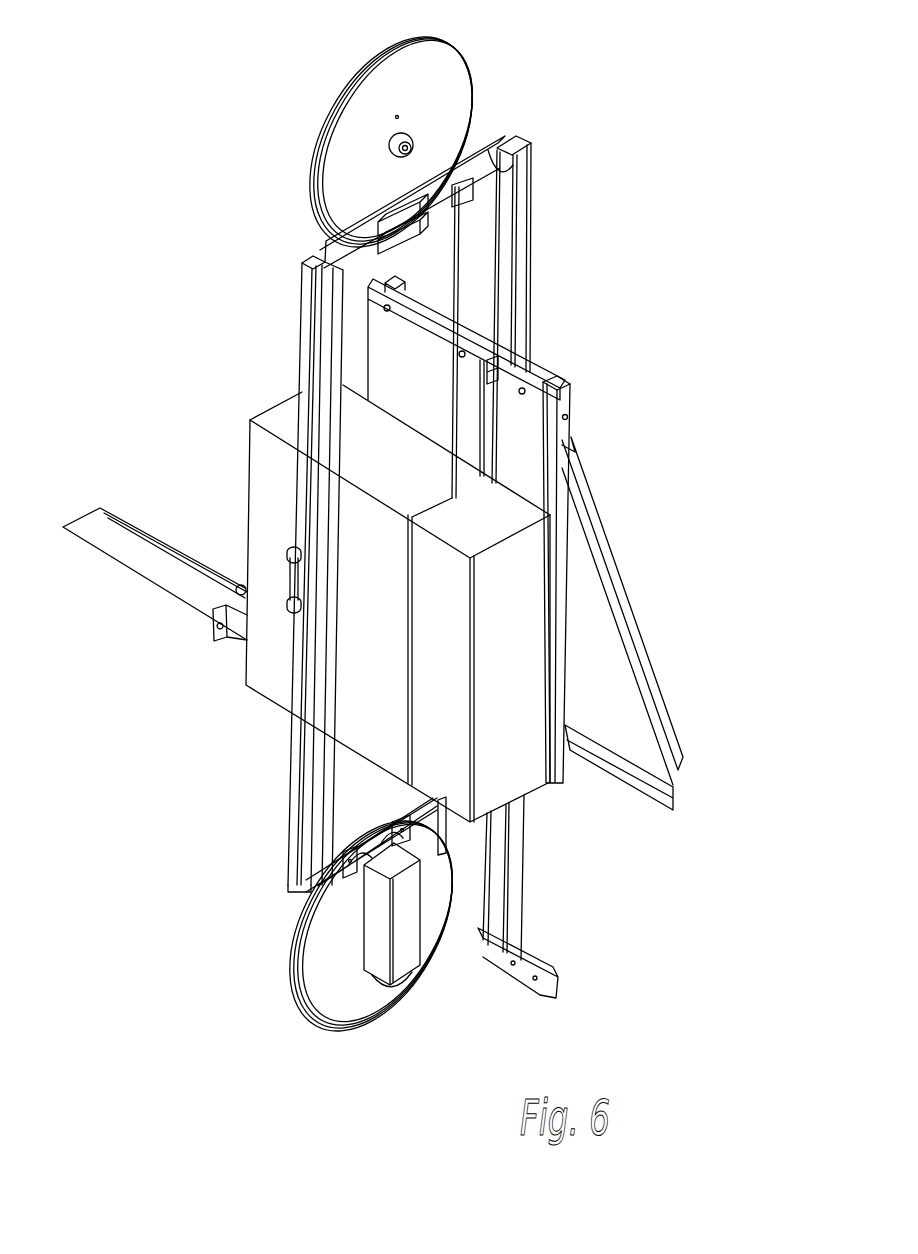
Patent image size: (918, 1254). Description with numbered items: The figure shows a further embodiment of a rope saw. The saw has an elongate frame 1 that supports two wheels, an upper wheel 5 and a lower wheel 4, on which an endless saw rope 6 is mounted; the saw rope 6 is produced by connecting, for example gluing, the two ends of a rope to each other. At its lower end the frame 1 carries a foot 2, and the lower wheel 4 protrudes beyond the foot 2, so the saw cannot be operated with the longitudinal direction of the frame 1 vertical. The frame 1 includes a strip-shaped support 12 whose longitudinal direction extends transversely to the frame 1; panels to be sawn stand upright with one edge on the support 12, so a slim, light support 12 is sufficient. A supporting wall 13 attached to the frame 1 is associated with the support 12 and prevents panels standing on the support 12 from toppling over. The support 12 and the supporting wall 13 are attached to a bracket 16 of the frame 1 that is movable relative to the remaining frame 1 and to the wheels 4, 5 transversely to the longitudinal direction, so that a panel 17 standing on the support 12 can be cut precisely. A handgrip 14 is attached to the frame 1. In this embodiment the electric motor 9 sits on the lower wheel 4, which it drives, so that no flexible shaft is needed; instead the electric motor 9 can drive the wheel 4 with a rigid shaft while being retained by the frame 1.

The frame 1 is at (298, 337).
The foot 2 is at (543, 968).
The lower wheel 4 is at (372, 1005).
The upper wheel 5 is at (443, 90).
The saw rope 6 is at (458, 250).
The electric motor 9 is at (380, 928).
The support 12 is at (137, 562).
The supporting wall 13 is at (515, 455).
The handgrip 14 is at (290, 592).
The bracket 16 is at (518, 315).
The panel 17 is at (513, 575).